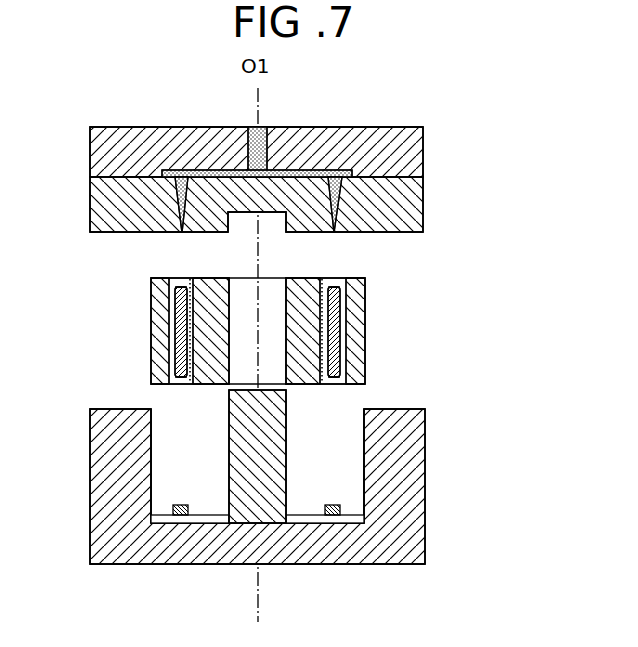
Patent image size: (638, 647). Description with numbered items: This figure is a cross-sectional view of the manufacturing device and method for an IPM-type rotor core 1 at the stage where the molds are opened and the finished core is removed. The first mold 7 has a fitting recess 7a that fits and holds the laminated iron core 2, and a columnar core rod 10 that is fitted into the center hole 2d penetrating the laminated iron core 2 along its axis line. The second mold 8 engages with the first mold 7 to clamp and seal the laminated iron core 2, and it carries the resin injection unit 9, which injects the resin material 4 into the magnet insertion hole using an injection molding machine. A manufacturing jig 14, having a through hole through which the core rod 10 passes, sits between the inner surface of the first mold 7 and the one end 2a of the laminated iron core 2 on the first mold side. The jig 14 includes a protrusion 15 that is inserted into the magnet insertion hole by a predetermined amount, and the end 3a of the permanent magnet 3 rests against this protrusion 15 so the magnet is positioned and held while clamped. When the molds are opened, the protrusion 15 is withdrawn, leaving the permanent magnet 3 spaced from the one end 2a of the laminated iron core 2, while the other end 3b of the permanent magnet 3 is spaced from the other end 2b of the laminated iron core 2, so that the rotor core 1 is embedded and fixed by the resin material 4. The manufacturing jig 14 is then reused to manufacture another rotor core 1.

The rotor core 1 is at (277, 322).
The laminated iron core 2 is at (356, 312).
The one end of the laminated iron core 2a is at (348, 396).
The other end of the laminated iron core 2b is at (366, 278).
The center hole 2d is at (243, 300).
The permanent magnet 3 is at (180, 322).
The end of the permanent magnet 3a is at (180, 378).
The other end of the permanent magnet 3b is at (180, 289).
The resin material 4 is at (172, 346).
The first mold 7 is at (428, 439).
The fitting recess 7a is at (331, 446).
The second mold 8 is at (426, 147).
The resin injection unit 9 is at (306, 164).
The core rod 10 is at (237, 476).
The manufacturing jig 14 is at (168, 524).
The protrusion 15 is at (180, 505).